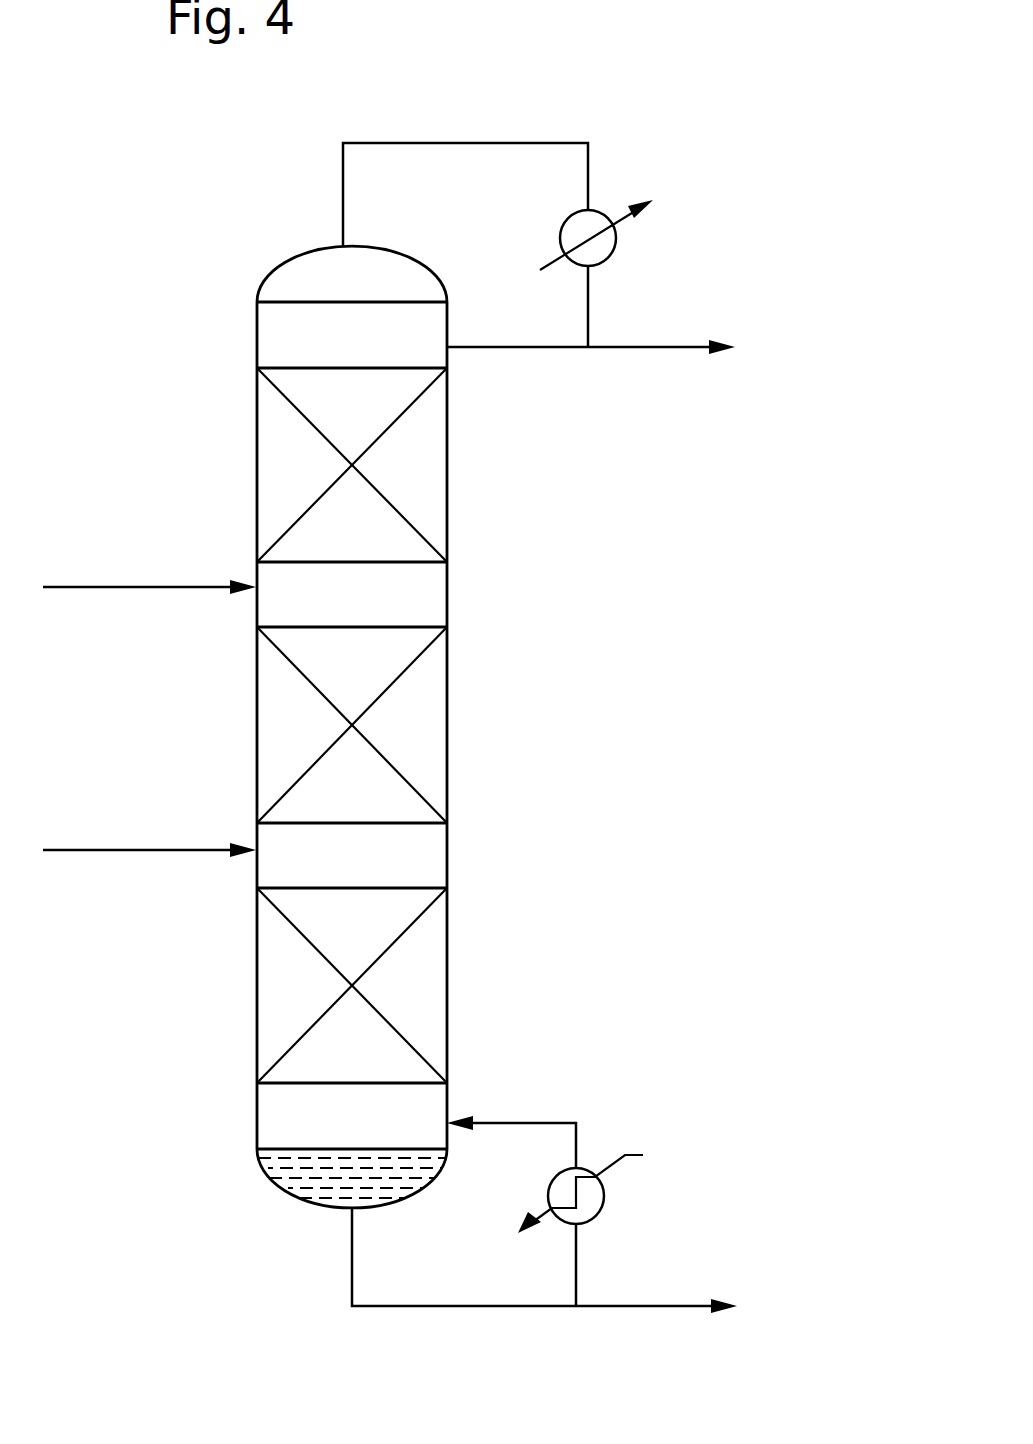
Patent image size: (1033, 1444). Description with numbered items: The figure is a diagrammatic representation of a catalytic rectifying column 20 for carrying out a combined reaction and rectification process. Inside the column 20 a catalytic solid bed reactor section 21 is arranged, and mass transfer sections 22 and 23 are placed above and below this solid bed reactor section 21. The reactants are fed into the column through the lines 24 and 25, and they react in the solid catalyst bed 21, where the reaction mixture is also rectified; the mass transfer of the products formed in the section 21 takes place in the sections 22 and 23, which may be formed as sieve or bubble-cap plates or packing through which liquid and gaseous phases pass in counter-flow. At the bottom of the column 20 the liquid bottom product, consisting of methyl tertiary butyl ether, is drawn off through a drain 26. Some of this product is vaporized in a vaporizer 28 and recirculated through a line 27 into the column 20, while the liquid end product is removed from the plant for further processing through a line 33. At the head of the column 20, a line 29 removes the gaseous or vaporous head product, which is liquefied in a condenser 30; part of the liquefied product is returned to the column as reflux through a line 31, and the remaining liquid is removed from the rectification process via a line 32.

The catalytic rectifying column 20 is at (463, 619).
The catalytic solid bed reactor section 21 is at (447, 725).
The mass transfer section 22 is at (447, 505).
The mass transfer section 23 is at (447, 992).
The line 24 is at (88, 585).
The line 25 is at (80, 847).
The bottoms line 26 is at (350, 1262).
The line 27 is at (513, 1120).
The vaporizer 28 is at (586, 1213).
The line 29 is at (453, 142).
The condenser 30 is at (598, 253).
The line 31 is at (548, 348).
The line 32 is at (678, 352).
The line 33 is at (650, 1308).